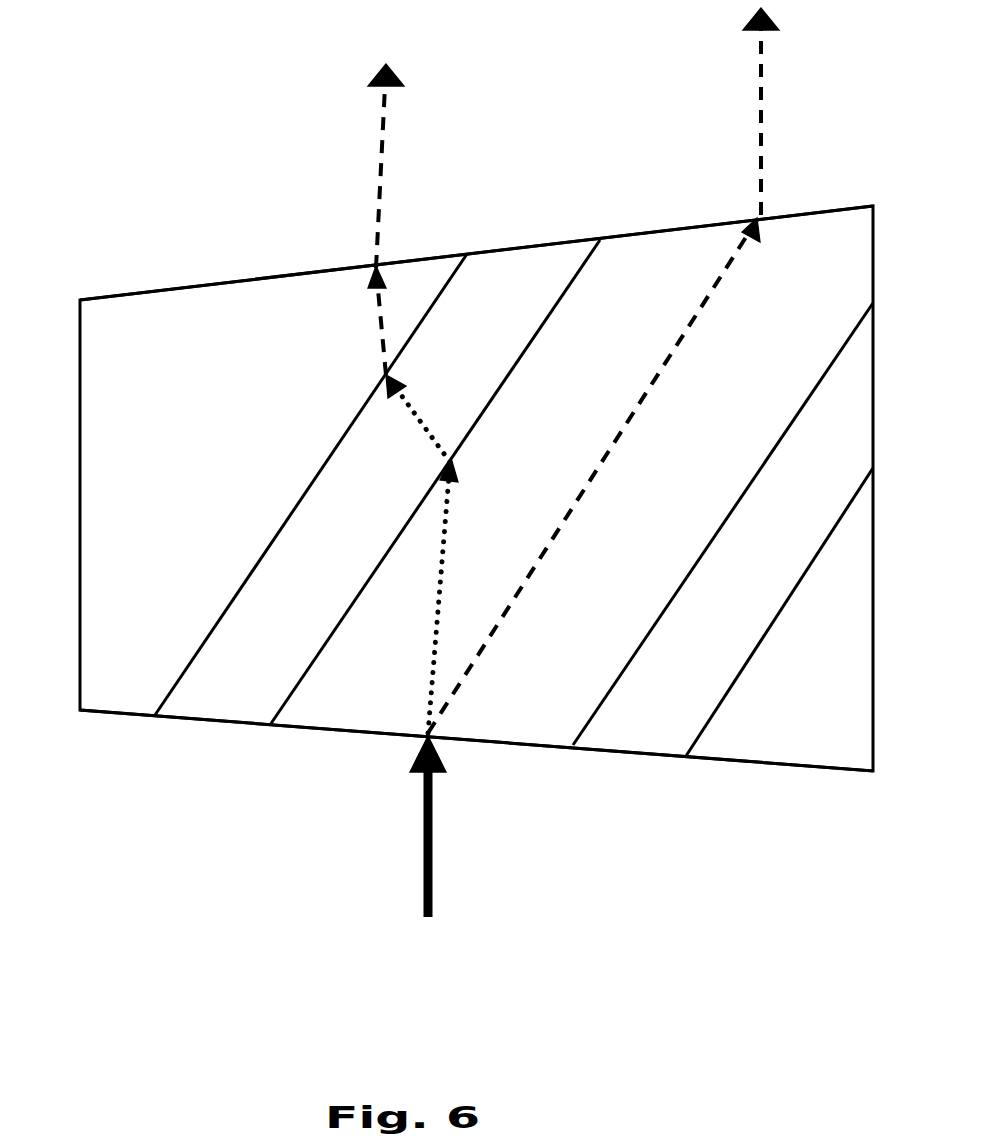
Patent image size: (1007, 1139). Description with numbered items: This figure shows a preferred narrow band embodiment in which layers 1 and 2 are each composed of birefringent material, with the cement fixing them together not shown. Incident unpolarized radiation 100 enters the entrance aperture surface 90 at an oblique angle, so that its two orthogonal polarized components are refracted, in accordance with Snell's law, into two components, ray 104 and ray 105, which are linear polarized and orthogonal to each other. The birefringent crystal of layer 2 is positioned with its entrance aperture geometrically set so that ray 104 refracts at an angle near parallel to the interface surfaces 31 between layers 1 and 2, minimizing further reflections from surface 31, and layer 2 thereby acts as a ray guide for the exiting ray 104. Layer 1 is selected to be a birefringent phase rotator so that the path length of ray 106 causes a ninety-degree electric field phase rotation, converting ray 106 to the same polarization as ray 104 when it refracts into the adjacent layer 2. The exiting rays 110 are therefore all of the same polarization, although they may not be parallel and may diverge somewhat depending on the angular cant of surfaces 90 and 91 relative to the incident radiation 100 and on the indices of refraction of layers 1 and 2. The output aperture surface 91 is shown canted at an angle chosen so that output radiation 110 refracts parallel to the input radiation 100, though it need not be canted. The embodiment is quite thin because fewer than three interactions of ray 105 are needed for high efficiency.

The layer 1 is at (209, 683).
The layer 2 is at (139, 695).
The interface surface 31 is at (407, 367).
The surface 90 is at (622, 778).
The output aperture surface 91 is at (204, 272).
The incident unpolarized radiation 100 is at (426, 858).
The ray 104 is at (380, 318).
The ray 105 is at (443, 520).
The ray 106 is at (420, 423).
The exiting rays 110 is at (375, 118).